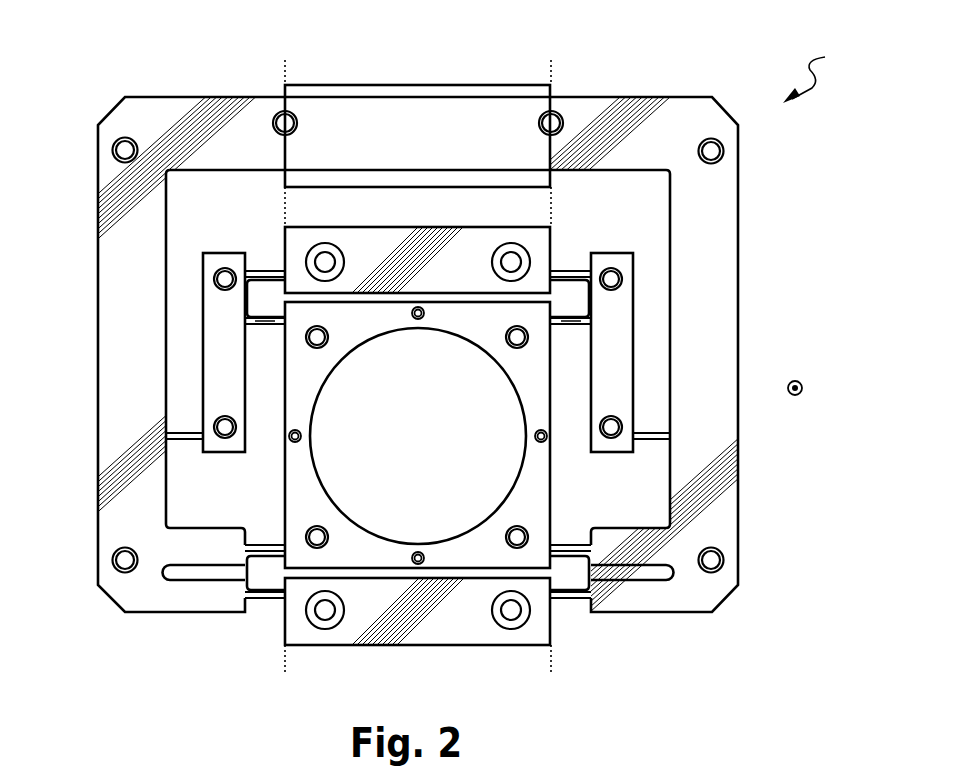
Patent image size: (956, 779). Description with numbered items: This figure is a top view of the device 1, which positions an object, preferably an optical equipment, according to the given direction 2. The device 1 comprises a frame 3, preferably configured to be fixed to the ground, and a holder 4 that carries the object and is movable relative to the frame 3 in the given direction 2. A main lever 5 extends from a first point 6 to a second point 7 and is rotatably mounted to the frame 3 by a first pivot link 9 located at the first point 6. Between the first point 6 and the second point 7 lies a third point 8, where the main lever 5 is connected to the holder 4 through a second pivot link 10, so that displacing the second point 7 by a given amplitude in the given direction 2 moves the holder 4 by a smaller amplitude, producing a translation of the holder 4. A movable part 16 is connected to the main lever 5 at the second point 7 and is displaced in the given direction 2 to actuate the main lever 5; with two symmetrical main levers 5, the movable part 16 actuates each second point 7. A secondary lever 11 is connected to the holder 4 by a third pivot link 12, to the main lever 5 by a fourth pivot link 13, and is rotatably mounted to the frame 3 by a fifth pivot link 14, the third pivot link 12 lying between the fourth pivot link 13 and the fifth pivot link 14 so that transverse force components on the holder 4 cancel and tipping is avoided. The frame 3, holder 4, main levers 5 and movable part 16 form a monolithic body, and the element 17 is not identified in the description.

The device 1 is at (811, 67).
The given direction 2 is at (803, 386).
The frame 3 is at (392, 248).
The holder 4 is at (296, 470).
The main lever 5 is at (112, 307).
The first point 6 is at (282, 601).
The second point 7 is at (285, 150).
The third point 8 is at (283, 546).
The first pivot link 9 is at (262, 601).
The second pivot link 10 is at (262, 546).
The secondary lever 11 is at (218, 260).
The third pivot link 12 is at (313, 342).
The fourth pivot link 13 is at (185, 437).
The fifth pivot link 14 is at (266, 273).
The movable part 16 is at (419, 85).
The connecting web 17 is at (262, 326).